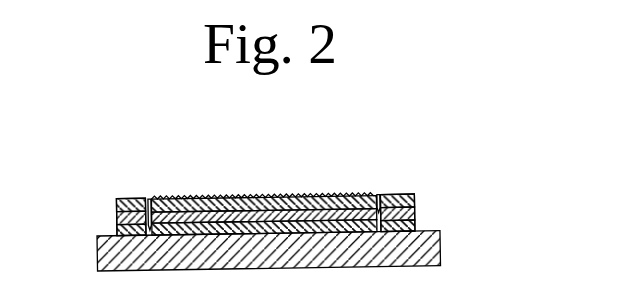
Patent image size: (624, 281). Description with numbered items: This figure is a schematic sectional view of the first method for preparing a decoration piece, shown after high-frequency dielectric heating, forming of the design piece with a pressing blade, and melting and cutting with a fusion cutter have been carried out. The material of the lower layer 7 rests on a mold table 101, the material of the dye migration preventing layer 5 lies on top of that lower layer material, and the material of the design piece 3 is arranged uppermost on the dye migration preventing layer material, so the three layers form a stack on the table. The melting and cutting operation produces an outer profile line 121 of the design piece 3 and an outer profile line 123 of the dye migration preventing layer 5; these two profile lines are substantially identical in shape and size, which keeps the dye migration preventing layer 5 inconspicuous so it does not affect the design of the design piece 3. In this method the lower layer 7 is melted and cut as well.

The design piece 3 is at (117, 203).
The dye migration preventing layer 5 is at (117, 216).
The lower layer 7 is at (117, 230).
The mold table 101 is at (418, 248).
The outer profile line of the design piece 121 is at (123, 199).
The outer profile line of the dye migration preventing layer 123 is at (415, 210).